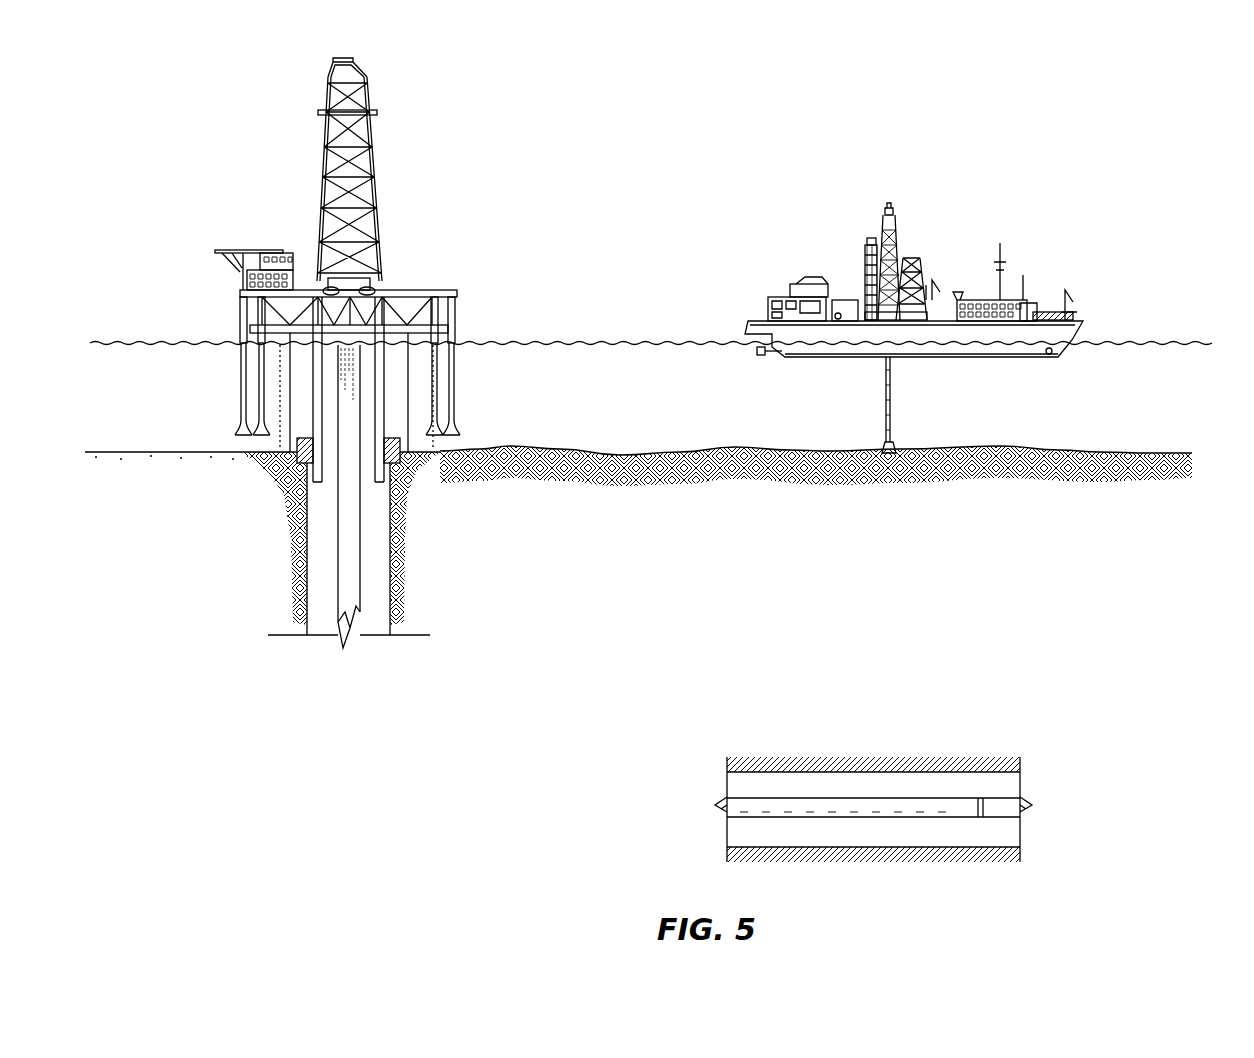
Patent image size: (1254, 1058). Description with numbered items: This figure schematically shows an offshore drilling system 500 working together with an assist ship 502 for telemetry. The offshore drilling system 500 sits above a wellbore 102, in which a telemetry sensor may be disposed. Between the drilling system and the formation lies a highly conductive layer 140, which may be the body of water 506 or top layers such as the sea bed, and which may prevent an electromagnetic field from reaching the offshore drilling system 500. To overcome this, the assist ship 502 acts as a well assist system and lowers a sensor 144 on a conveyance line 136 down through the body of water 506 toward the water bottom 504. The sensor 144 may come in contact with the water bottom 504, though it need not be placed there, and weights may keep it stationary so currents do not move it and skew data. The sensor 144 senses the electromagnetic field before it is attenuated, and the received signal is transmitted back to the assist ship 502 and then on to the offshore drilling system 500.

The offshore drilling system 500 is at (420, 141).
The assist ship 502 is at (1049, 235).
The water bottom 504 is at (619, 451).
The body of water 506 is at (1170, 354).
The conveyance line 136 is at (887, 397).
The highly conductive layer 140 is at (1062, 418).
The sensor 144 is at (891, 454).
The wellbore 102 is at (298, 502).